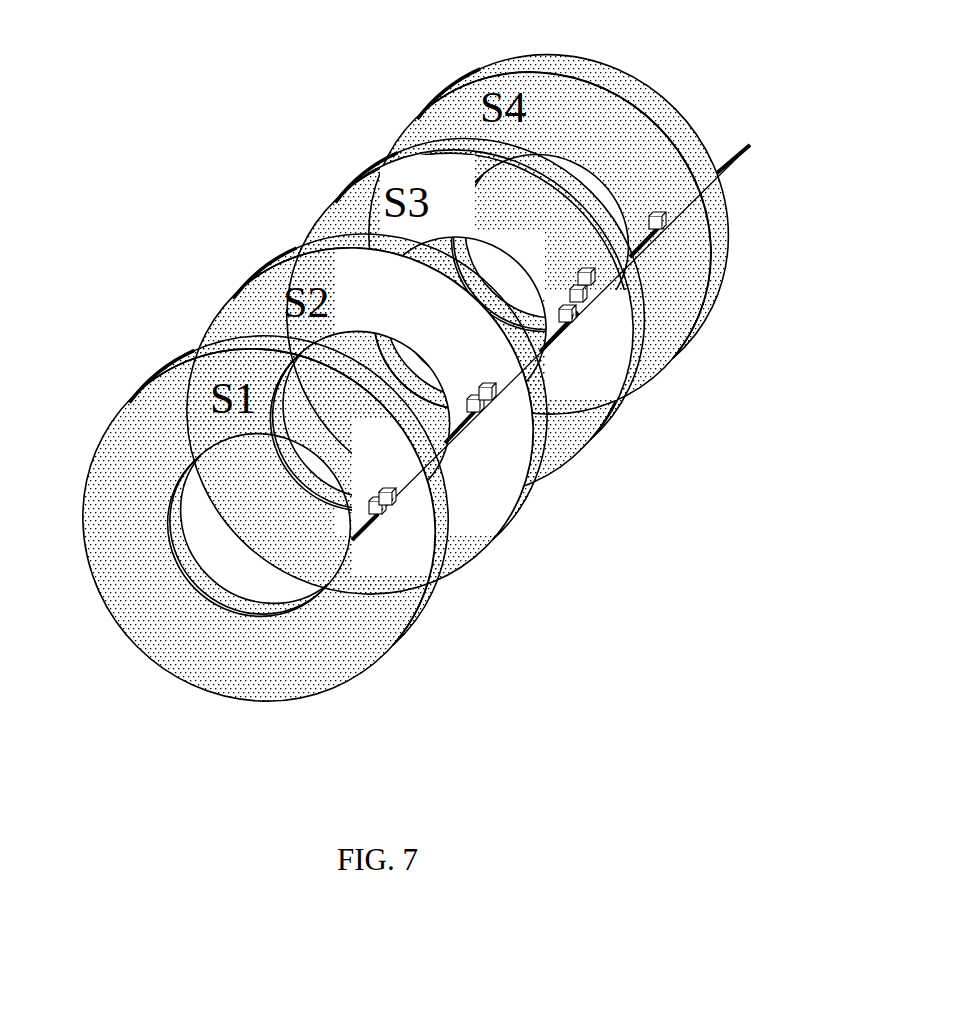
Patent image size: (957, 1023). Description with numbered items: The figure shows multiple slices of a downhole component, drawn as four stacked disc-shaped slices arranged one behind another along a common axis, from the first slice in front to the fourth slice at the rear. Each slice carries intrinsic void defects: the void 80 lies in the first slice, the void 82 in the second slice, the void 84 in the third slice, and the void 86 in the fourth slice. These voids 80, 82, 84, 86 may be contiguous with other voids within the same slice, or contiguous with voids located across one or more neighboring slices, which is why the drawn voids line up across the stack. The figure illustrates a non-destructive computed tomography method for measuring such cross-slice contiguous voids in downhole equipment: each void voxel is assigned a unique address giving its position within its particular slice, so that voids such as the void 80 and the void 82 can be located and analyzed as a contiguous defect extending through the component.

The void 80 is at (400, 522).
The void 82 is at (503, 418).
The void 84 is at (597, 318).
The void 86 is at (683, 226).